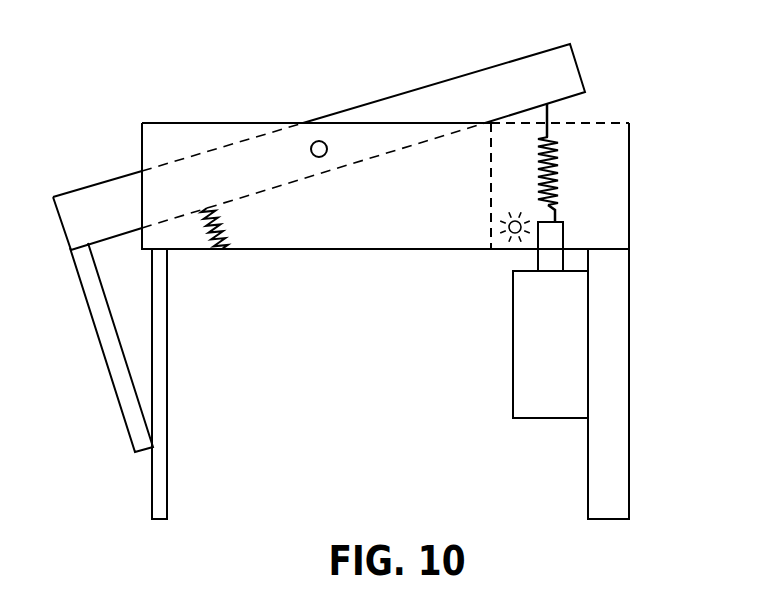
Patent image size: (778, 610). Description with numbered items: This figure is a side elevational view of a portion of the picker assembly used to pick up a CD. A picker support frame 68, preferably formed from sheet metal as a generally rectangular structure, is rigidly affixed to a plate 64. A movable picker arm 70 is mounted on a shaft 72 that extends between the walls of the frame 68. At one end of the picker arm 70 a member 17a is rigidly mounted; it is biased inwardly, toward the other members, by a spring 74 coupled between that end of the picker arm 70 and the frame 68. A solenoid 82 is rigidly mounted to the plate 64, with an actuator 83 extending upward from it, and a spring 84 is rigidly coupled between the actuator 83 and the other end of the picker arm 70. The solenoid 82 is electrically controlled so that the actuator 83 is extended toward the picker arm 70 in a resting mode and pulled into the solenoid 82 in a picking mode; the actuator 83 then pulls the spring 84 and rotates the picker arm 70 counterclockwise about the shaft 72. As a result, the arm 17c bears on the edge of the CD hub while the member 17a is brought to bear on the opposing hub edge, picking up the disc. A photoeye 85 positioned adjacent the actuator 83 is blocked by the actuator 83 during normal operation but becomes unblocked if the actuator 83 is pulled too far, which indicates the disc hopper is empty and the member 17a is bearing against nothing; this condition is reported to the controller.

The member 17a is at (88, 313).
The arm 17c is at (168, 367).
The plate 64 is at (629, 363).
The picker support frame 68 is at (629, 153).
The picker arm 70 is at (453, 78).
The shaft 72 is at (327, 148).
The return spring 74 is at (228, 222).
The solenoid 82 is at (550, 344).
The actuator 83 is at (563, 233).
The spring 84 is at (560, 164).
The photoeye 85 is at (509, 236).